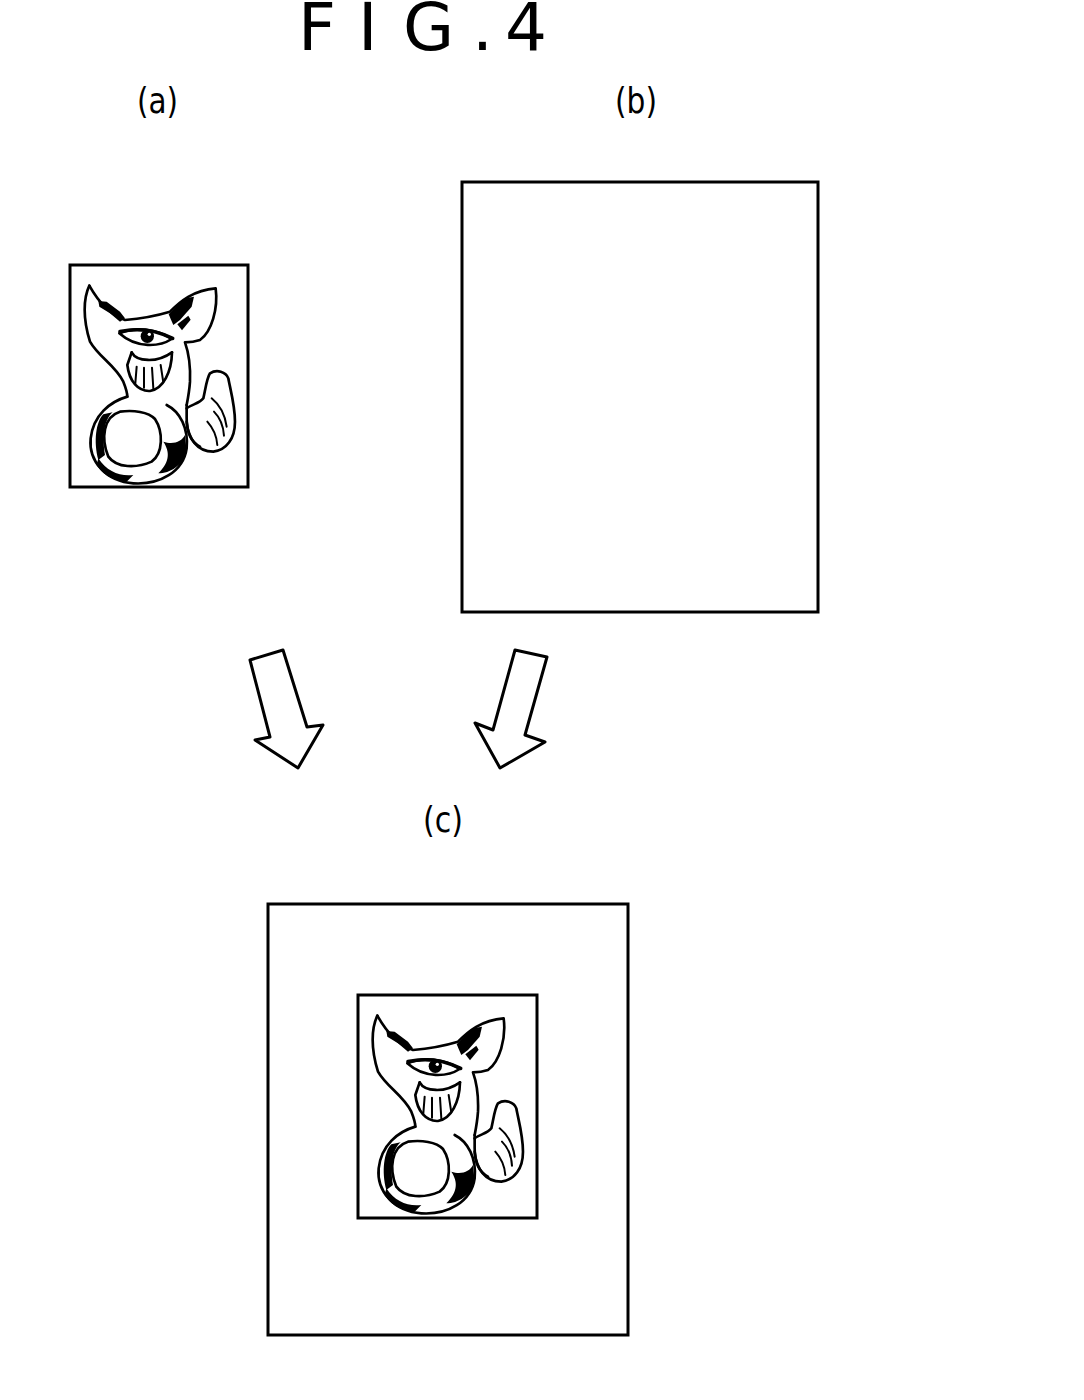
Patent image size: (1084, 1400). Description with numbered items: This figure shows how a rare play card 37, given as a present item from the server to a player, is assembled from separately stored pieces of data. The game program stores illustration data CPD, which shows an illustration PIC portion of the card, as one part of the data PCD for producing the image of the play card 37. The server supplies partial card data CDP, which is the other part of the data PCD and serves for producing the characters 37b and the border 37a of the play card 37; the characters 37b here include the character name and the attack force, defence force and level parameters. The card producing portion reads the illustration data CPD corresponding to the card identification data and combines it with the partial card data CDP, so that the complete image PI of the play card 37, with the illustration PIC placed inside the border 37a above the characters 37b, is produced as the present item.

The illustration data CPD is at (217, 430).
The illustration portion PIC is at (186, 468).
The partial card data CDP is at (709, 383).
The border 37a is at (818, 328).
The characters 37b is at (767, 595).
The play card 37 is at (426, 1082).
The card production data PCD is at (454, 1082).
The image of the play card PI is at (235, 1175).